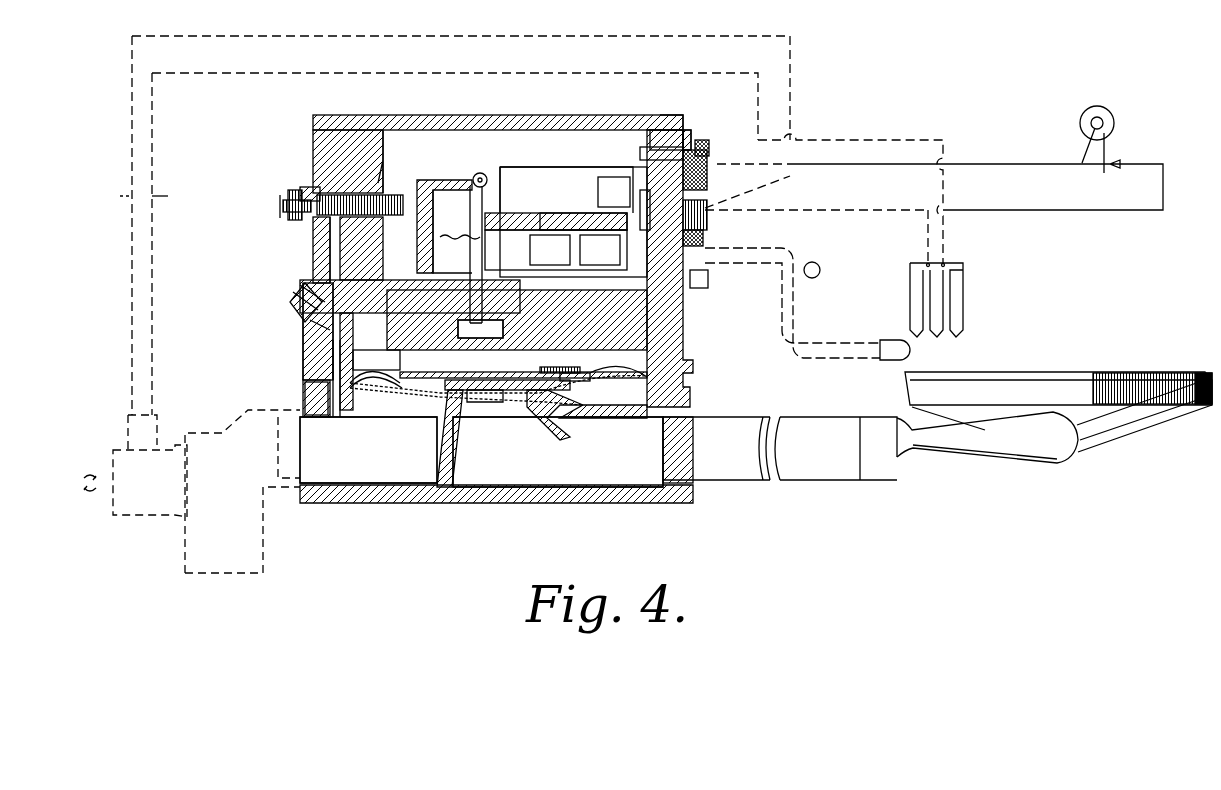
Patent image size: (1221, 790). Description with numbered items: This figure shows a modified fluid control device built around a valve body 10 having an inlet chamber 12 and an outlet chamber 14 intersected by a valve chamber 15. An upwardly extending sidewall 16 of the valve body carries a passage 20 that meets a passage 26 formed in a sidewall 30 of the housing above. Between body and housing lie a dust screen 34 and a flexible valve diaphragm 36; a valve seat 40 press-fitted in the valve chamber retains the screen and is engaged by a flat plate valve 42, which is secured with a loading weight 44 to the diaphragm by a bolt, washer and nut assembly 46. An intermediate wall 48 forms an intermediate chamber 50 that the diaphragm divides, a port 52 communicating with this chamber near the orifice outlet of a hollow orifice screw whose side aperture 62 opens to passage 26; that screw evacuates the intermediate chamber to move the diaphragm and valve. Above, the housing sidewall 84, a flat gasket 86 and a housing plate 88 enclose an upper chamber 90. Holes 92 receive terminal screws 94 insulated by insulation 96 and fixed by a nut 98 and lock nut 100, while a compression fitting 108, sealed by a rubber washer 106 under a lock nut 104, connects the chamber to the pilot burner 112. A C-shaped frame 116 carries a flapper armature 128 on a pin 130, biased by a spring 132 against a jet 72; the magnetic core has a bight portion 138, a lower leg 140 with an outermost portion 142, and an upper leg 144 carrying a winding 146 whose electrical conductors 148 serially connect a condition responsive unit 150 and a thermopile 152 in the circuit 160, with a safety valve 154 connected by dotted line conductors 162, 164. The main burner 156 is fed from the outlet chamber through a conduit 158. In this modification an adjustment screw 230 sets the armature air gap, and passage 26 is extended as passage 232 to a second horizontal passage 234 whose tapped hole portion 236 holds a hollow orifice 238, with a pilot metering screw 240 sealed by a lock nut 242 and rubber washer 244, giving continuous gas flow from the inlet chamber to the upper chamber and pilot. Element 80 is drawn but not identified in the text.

The valve body 10 is at (563, 503).
The inlet chamber 12 is at (393, 455).
The outlet chamber 14 is at (637, 460).
The valve chamber 15 is at (498, 455).
The sidewall 16 is at (305, 396).
The passage 20 is at (345, 403).
The passage 26 is at (333, 343).
The sidewall 30 is at (315, 357).
The dust screen 34 is at (415, 395).
The valve diaphragm 36 is at (385, 390).
The valve seat 40 is at (460, 400).
The flat plate valve 42 is at (540, 385).
The loading weight 44 is at (525, 373).
The bolt, washer and nut assembly 46 is at (495, 397).
The intermediate wall 48 is at (563, 365).
The intermediate chamber 50 is at (480, 366).
The port 52 is at (378, 359).
The side aperture 62 is at (323, 330).
The jet 72 is at (455, 350).
The spring ring 80 is at (298, 296).
The sidewall 84 is at (687, 133).
The flat gasket 86 is at (684, 131).
The housing plate 88 is at (658, 116).
The upper chamber 90 is at (573, 204).
The hole 92 is at (710, 150).
The terminal screw 94 is at (709, 180).
The insulation 96 is at (705, 237).
The nut 98 is at (690, 148).
The lock nut 100 is at (708, 219).
The lock nut 104 is at (702, 279).
The rubber washer 106 is at (810, 278).
The compression fitting 108 is at (792, 294).
The pilot burner 112 is at (888, 333).
The C-shaped frame 116 is at (425, 205).
The flapper armature 128 is at (470, 248).
The pin 130 is at (490, 176).
The spring 132 is at (460, 232).
The bight portion 138 is at (598, 183).
The lower leg 140 is at (550, 249).
The outermost portion 142 is at (556, 250).
The upper leg 144 is at (532, 212).
The winding 146 is at (546, 212).
The electrical conductors 148 is at (600, 249).
The condition responsive unit 150 is at (1145, 146).
The thermopile 152 is at (1005, 318).
The safety valve 154 is at (252, 520).
The main burner 156 is at (1073, 363).
The conduit 158 is at (787, 495).
The circuit 160 is at (520, 66).
The dotted line conductor 162 is at (113, 196).
The dotted line conductor 164 is at (175, 196).
The adjustment screw 230 is at (480, 329).
The passage 232 is at (333, 238).
The second horizontal passage 234 is at (318, 186).
The tapped hole portion 236 is at (383, 170).
The hollow orifice 238 is at (378, 190).
The pilot metering screw 240 is at (283, 210).
The lock nut 242 is at (288, 189).
The rubber washer 244 is at (280, 190).